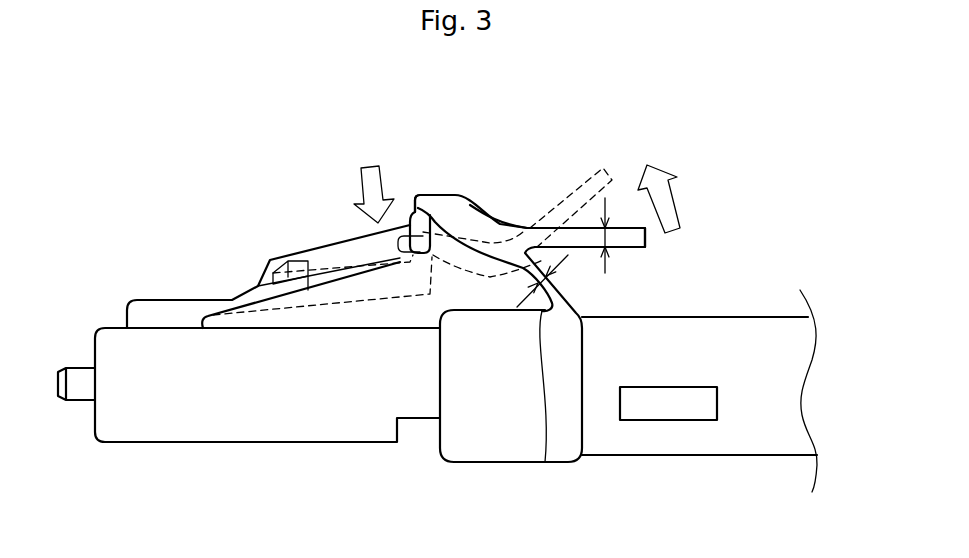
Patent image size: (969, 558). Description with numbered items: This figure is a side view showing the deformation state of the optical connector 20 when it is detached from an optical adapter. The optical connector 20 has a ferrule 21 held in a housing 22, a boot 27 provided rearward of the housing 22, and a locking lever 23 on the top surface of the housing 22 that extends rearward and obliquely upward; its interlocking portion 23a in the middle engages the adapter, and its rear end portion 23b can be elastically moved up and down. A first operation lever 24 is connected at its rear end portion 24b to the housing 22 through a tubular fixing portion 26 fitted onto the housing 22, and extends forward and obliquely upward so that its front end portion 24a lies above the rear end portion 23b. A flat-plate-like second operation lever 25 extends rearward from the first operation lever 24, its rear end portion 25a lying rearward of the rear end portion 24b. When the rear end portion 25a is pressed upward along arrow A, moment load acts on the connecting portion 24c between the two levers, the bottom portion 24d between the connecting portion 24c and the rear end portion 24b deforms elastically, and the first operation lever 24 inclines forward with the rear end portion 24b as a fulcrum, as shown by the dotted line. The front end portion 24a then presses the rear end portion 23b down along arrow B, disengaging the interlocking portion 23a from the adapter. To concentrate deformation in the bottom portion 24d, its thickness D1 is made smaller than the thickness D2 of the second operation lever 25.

The optical connector 20 is at (724, 218).
The ferrule 21 is at (78, 373).
The housing 22 is at (270, 422).
The locking lever 23 is at (338, 242).
The interlocking portion 23a is at (322, 254).
The rear end portion of the locking lever 23b is at (404, 210).
The first operation lever 24 is at (463, 198).
The front end portion of the first operation lever 24a is at (420, 196).
The rear end portion of the first operation lever 24b is at (577, 305).
The connecting portion 24c is at (498, 232).
The bottom portion of the first operation lever 24d is at (545, 462).
The second operation lever 25 is at (582, 226).
The rear end portion of the second operation lever 25a is at (631, 240).
The fixing portion 26 is at (482, 445).
The boot 27 is at (765, 435).
The thickness of the bottom portion D1 is at (530, 281).
The thickness of the second operation lever D2 is at (607, 240).
The arrow A is at (664, 204).
The arrow B is at (362, 182).